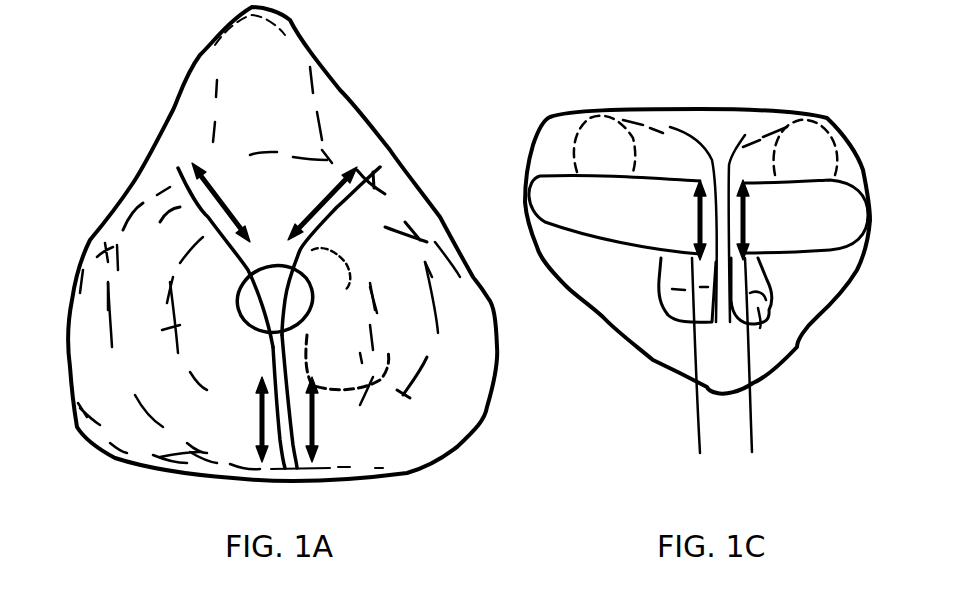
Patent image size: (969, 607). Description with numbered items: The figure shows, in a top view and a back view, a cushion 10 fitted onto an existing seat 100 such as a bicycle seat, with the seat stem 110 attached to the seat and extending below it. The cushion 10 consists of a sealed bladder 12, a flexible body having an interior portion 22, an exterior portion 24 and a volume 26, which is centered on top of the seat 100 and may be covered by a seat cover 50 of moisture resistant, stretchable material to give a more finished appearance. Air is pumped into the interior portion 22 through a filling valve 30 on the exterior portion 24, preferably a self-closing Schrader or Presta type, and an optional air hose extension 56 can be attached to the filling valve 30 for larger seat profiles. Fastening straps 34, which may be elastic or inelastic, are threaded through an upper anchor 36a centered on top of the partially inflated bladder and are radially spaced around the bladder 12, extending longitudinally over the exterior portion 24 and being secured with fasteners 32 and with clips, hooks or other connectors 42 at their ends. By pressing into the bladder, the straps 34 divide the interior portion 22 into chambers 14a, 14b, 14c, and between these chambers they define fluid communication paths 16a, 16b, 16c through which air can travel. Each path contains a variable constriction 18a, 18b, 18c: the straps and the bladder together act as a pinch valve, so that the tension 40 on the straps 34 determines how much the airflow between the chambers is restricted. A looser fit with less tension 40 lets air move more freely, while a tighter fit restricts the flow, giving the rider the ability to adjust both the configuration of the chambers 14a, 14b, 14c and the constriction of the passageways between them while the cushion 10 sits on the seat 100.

In FIG. 1A, the cushion 10 is at (368, 80).
In FIG. 1C, the cushion 10 is at (527, 103).
In FIG. 1A, the sealed bladder 12 is at (423, 323).
In FIG. 1C, the sealed bladder 12 is at (598, 127).
In FIG. 1A, the chamber 14a is at (153, 326).
In FIG. 1A, the chamber 14b is at (240, 165).
In FIG. 1A, the chamber 14c is at (403, 395).
In FIG. 1A, the fluid communication path 16a is at (297, 445).
In FIG. 1C, the fluid communication path 16a is at (730, 165).
In FIG. 1A, the fluid communication path 16b is at (205, 215).
In FIG. 1A, the fluid communication path 16c is at (340, 200).
In FIG. 1A, the variable constriction 18a is at (300, 428).
In FIG. 1C, the variable constriction 18a is at (717, 193).
In FIG. 1A, the variable constriction 18b is at (200, 215).
In FIG. 1A, the variable constriction 18c is at (337, 217).
In FIG. 1A, the interior portion 22 is at (143, 373).
In FIG. 1A, the exterior portion 24 is at (155, 423).
In FIG. 1A, the volume 26 is at (133, 325).
In FIG. 1A, the filling valve 30 is at (405, 395).
In FIG. 1C, the fastener 32 is at (758, 327).
In FIG. 1A, the strap 34 is at (305, 285).
In FIG. 1A, the upper anchor 36a is at (305, 285).
In FIG. 1A, the tension 40 is at (246, 238).
In FIG. 1C, the tension 40 is at (737, 247).
In FIG. 1C, the connector 42 is at (760, 300).
In FIG. 1A, the seat cover 50 is at (200, 55).
In FIG. 1C, the seat cover 50 is at (807, 318).
In FIG. 1A, the air hose extension 56 is at (327, 332).
In FIG. 1A, the seat 100 is at (460, 393).
In FIG. 1C, the seat 100 is at (577, 190).
In FIG. 1C, the seat stem 110 is at (717, 412).